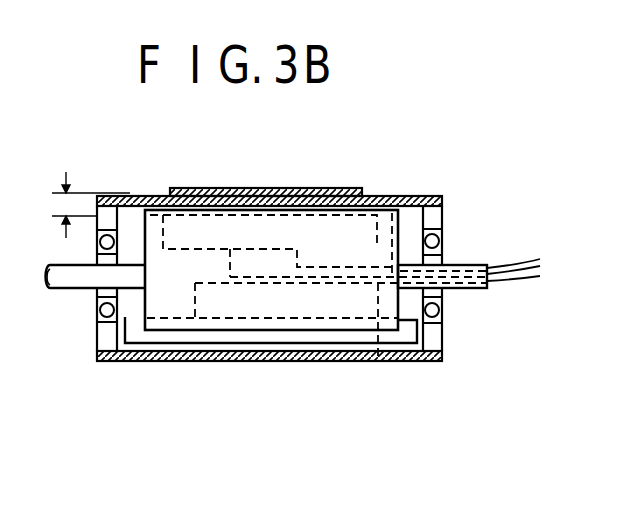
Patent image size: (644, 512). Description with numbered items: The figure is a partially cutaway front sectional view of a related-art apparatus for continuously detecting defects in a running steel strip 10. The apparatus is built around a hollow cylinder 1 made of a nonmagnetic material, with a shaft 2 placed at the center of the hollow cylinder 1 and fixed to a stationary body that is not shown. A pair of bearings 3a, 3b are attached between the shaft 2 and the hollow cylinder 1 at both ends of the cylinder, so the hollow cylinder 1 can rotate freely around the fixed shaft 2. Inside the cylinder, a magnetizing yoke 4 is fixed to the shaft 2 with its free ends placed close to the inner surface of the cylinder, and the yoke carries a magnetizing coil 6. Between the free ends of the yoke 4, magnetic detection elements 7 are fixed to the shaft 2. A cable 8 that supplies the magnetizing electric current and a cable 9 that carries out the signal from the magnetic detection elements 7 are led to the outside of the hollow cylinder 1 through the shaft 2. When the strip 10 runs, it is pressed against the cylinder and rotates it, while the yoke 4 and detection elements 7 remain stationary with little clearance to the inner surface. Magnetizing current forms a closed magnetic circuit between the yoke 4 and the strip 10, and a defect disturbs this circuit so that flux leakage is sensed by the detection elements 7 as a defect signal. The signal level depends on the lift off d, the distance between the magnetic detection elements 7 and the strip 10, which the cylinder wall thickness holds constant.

The hollow cylinder 1 is at (250, 362).
The shaft 2 is at (72, 278).
The bearing 3a is at (100, 339).
The bearing 3b is at (444, 328).
The magnetizing yoke 4 is at (168, 306).
The magnetizing coil 6 is at (405, 345).
The magnetic detection elements 7 is at (373, 205).
The cable 8 is at (378, 358).
The cable 9 is at (392, 213).
The strip 10 is at (250, 187).
The lift off d is at (85, 205).